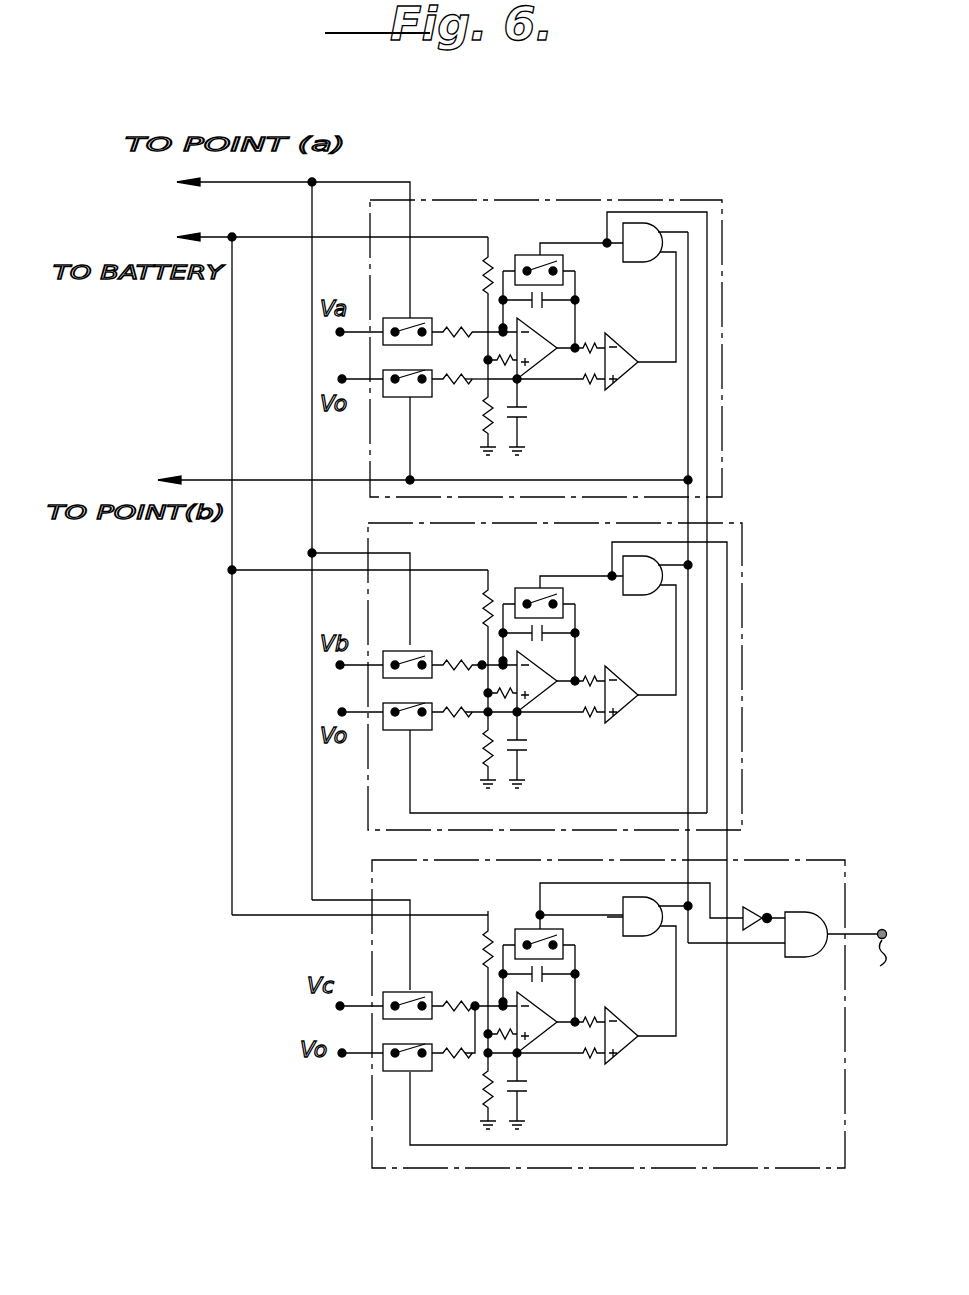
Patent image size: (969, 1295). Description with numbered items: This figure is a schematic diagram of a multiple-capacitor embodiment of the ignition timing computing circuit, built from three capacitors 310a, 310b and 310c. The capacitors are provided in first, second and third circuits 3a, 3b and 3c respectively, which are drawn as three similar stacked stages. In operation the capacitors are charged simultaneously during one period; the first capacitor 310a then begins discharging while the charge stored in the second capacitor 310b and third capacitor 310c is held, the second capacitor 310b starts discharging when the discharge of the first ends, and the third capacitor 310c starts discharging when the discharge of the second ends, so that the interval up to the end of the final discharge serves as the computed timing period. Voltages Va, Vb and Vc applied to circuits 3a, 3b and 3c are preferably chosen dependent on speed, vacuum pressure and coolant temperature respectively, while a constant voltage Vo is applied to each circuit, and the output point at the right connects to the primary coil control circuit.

The first circuit 3a is at (551, 348).
The second circuit 3b is at (513, 676).
The third circuit 3c is at (559, 1014).
The first capacitor 310a is at (548, 300).
The second capacitor 310b is at (550, 645).
The third capacitor 310c is at (548, 985).